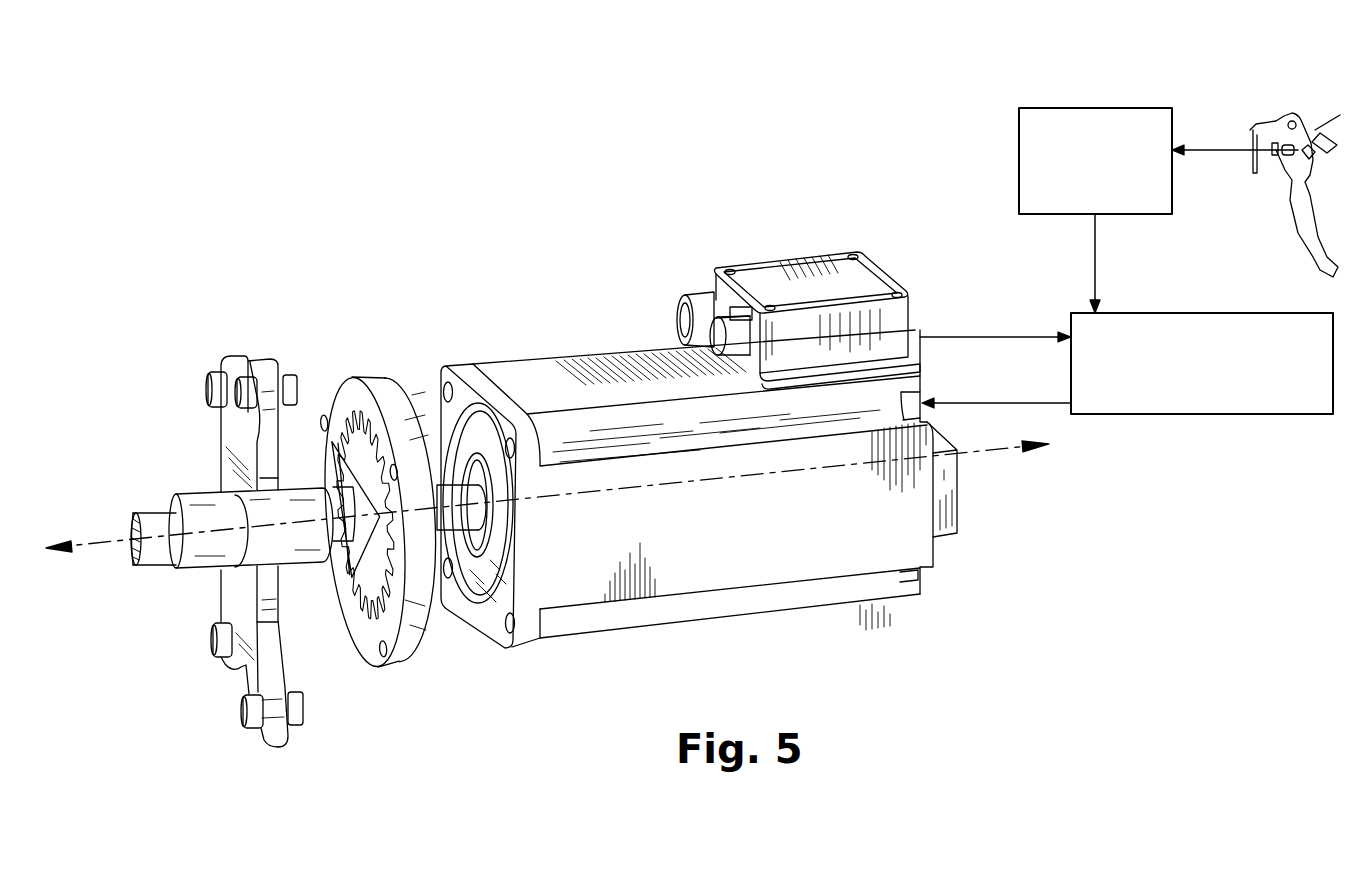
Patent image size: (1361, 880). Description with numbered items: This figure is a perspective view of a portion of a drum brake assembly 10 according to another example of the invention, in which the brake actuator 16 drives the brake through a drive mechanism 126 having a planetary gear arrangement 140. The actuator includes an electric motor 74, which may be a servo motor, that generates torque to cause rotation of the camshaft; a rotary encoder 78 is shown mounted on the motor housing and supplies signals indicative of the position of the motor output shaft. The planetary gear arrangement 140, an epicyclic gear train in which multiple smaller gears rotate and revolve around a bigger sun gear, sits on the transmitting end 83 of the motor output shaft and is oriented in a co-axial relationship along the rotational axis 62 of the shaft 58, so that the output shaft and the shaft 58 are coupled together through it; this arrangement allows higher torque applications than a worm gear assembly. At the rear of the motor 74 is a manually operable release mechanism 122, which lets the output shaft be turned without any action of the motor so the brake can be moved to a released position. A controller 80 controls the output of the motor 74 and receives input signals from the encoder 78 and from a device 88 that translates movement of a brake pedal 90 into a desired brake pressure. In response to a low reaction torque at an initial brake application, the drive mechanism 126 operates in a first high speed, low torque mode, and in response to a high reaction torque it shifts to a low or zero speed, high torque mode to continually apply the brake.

The drum brake assembly 10 is at (445, 211).
The brake actuator 16 is at (982, 470).
The shaft 58 is at (351, 525).
The rotational axis 62 is at (117, 543).
The electric motor 74 is at (770, 566).
The rotary encoder 78 is at (793, 284).
The controller 80 is at (1198, 415).
The transmitting end 83 is at (457, 518).
The device 88 is at (1093, 106).
The brake pedal 90 is at (1295, 182).
The manually operable release mechanism 122 is at (951, 540).
The drive mechanism 126 is at (337, 694).
The planetary gear arrangement 140 is at (378, 343).